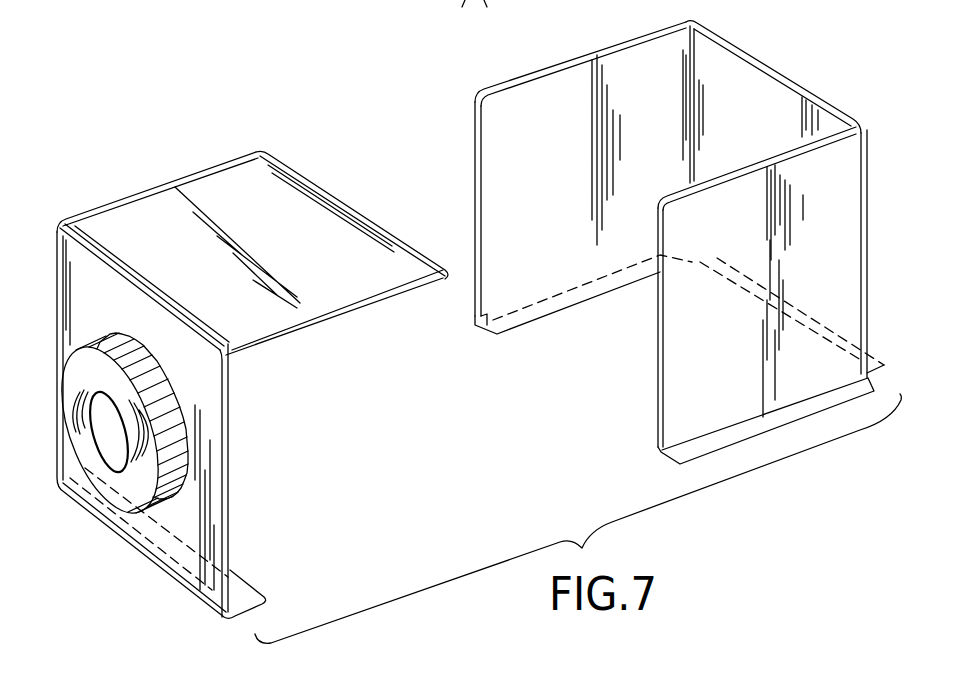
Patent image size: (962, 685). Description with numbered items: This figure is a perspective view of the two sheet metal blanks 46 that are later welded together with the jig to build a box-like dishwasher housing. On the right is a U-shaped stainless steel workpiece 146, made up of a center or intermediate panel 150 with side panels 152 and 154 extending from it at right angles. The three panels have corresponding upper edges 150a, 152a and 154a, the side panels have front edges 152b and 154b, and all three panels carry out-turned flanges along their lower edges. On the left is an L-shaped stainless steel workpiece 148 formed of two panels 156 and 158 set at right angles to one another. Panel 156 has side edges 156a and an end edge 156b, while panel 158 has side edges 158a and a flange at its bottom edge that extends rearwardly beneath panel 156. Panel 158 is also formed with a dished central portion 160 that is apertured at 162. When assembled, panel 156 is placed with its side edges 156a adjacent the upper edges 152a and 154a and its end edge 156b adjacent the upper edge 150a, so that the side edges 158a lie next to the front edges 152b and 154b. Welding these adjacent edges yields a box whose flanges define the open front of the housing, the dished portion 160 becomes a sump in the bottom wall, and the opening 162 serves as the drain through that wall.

The blower assembly 46 is at (452, 9).
The U-shaped stainless steel workpiece 146 is at (806, 64).
The L-shaped stainless steel workpiece 148 is at (238, 138).
The center or intermediate panel 150 is at (733, 66).
The upper edge of center panel 150a is at (832, 100).
The side panel 152 is at (626, 52).
The upper edge of side panel 152a is at (532, 68).
The front edge of side panel 152b is at (437, 209).
The side panel 154 is at (837, 197).
The upper edge of side panel 154a is at (827, 142).
The front edge of side panel 154b is at (658, 362).
The panel 156 is at (267, 177).
The side edges of panel 156a is at (174, 178).
The end edge of panel 156b is at (347, 203).
The panel 158 is at (207, 378).
The side edges of panel 158a is at (228, 432).
The dished central portion 160 is at (152, 445).
The aperture 162 is at (88, 418).